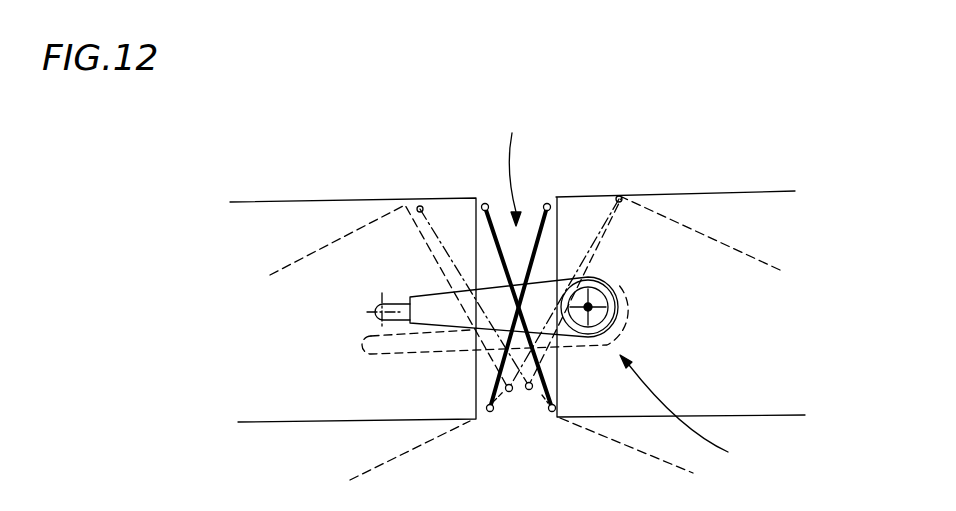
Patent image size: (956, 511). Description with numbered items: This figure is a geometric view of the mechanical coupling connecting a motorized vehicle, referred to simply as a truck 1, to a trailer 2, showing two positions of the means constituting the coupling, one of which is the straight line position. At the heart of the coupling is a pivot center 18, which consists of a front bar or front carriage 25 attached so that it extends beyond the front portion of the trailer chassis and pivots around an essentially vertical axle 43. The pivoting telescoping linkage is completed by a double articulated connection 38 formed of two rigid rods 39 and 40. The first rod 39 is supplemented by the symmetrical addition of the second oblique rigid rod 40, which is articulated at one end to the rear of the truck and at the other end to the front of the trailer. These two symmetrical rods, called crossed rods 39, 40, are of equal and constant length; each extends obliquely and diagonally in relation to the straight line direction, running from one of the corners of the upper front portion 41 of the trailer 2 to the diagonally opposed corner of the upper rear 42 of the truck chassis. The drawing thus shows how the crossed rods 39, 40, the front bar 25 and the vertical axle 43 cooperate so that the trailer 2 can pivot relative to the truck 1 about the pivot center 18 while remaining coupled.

The truck 1 is at (255, 220).
The trailer 2 is at (738, 210).
The pivot center 18 is at (693, 411).
The front carriage 25 is at (638, 318).
The double articulated connection 38 is at (516, 166).
The first rod 39 is at (500, 403).
The second rod 40 is at (542, 403).
The upper front portion 41 is at (557, 233).
The upper rear 42 is at (473, 242).
The vertical axle 43 is at (588, 307).